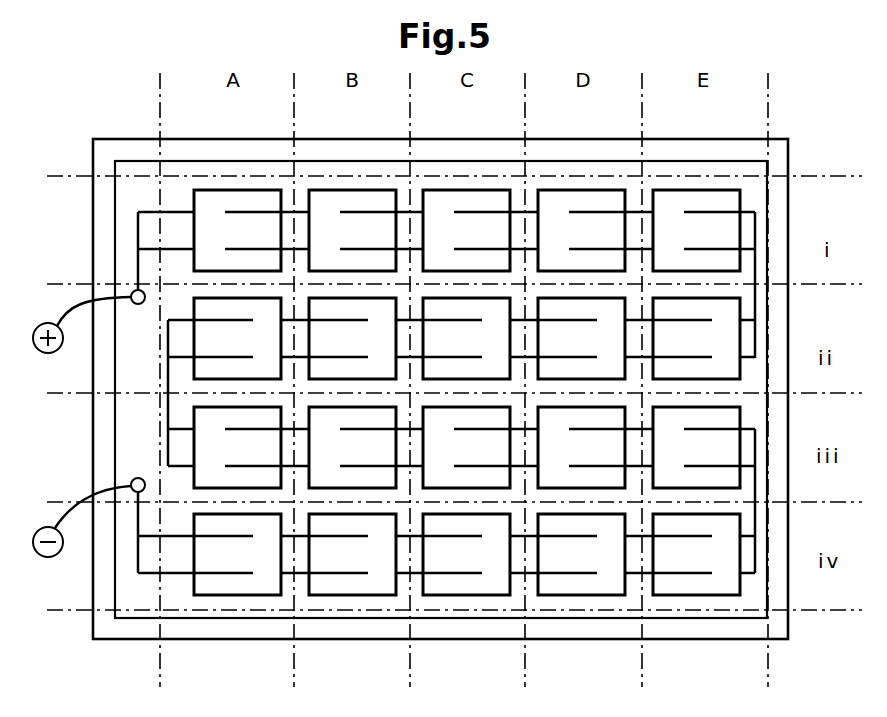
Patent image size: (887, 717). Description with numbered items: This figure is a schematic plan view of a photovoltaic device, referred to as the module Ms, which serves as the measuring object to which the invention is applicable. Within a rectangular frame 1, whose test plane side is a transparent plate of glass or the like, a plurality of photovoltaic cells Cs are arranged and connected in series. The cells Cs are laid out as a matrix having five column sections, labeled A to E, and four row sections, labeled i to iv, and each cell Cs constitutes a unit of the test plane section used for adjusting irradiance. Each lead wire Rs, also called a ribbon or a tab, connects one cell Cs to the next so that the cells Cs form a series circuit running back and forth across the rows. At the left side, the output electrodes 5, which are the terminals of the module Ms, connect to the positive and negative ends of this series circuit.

The module Ms is at (116, 133).
The rectangular frame 1 is at (100, 210).
The cells Cs is at (222, 202).
The lead wire Rs is at (472, 208).
The output electrode 5 is at (133, 303).